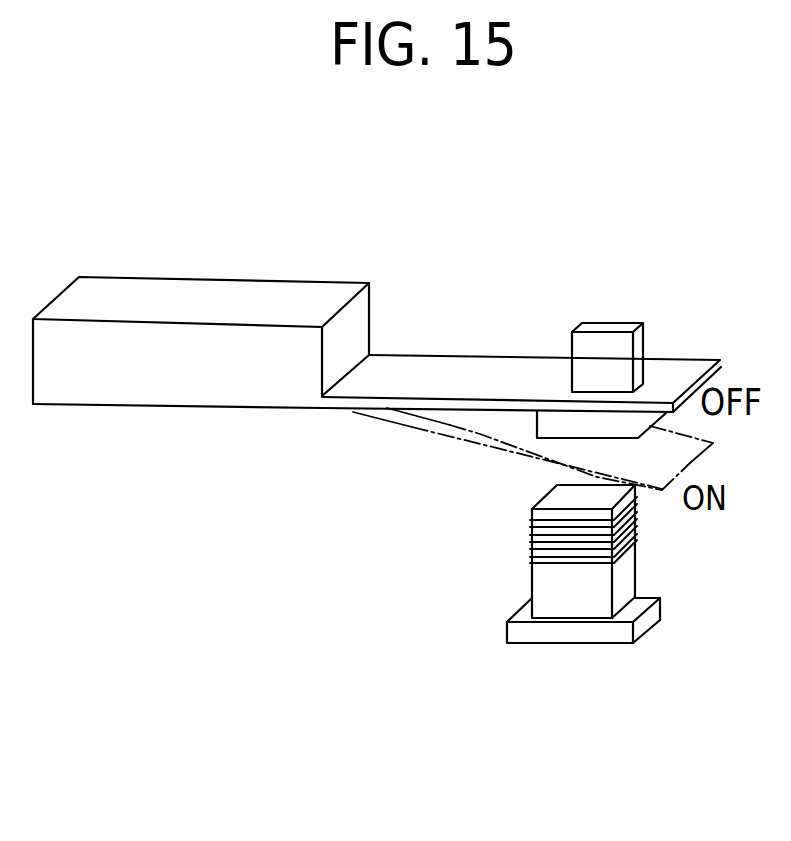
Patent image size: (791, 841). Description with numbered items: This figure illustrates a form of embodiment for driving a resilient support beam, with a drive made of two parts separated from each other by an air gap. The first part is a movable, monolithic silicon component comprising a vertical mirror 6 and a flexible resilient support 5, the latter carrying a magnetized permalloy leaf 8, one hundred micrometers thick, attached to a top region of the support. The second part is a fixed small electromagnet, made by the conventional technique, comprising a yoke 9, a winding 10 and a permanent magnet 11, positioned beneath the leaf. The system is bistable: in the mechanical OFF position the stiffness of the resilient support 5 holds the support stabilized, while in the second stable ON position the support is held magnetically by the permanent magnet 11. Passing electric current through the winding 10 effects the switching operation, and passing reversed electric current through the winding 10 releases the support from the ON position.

The flexible resilient support 5 is at (500, 367).
The vertical mirror 6 is at (612, 340).
The magnetized permalloy leaf 8 is at (553, 423).
The yoke 9 is at (545, 583).
The winding 10 is at (532, 543).
The permanent magnet 11 is at (517, 635).